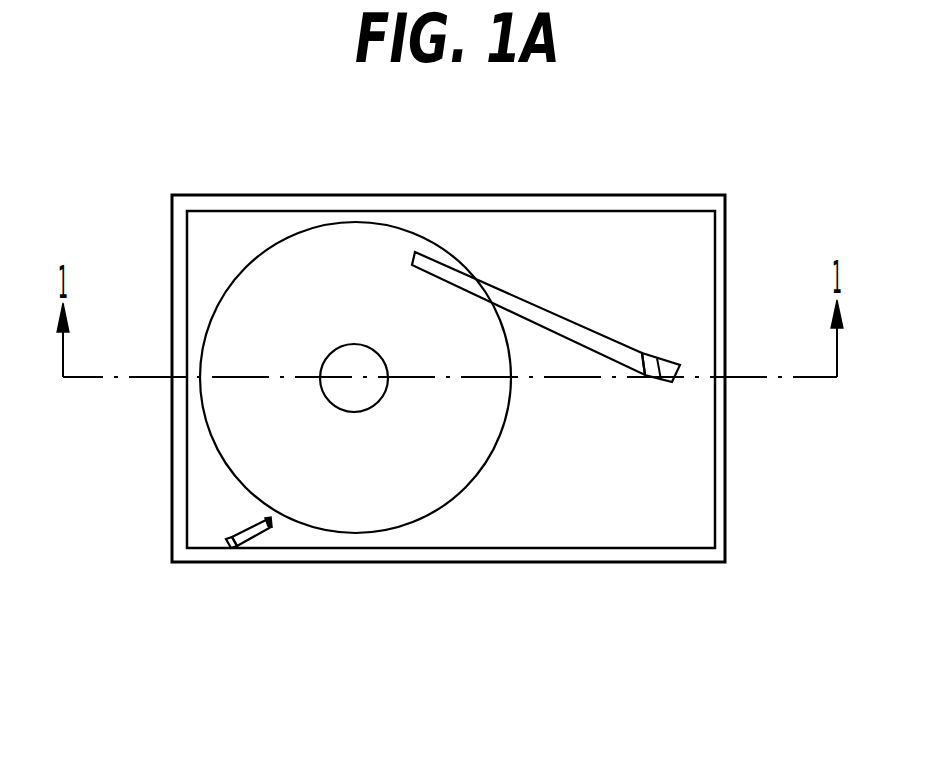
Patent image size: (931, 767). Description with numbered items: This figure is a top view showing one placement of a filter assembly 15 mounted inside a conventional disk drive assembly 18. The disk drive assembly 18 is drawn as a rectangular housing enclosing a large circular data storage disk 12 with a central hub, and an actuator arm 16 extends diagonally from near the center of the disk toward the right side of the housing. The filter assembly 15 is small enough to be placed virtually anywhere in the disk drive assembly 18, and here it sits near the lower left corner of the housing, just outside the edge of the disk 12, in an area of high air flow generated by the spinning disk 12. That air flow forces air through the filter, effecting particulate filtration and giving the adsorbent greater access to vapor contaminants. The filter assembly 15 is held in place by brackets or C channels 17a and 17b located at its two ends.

The data storage disk 12 is at (332, 262).
The filter assembly 15 is at (232, 530).
The actuator arm 16 is at (592, 327).
The C channel 17a is at (232, 537).
The C channel 17b is at (268, 525).
The disk drive assembly 18 is at (448, 330).